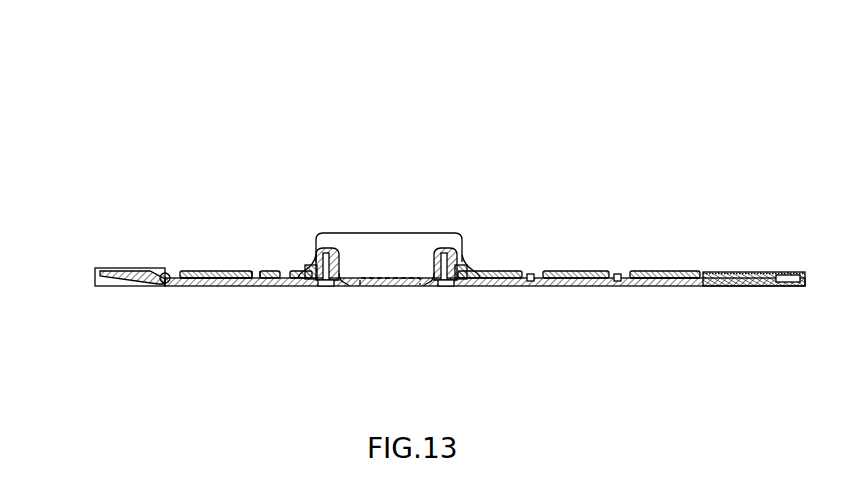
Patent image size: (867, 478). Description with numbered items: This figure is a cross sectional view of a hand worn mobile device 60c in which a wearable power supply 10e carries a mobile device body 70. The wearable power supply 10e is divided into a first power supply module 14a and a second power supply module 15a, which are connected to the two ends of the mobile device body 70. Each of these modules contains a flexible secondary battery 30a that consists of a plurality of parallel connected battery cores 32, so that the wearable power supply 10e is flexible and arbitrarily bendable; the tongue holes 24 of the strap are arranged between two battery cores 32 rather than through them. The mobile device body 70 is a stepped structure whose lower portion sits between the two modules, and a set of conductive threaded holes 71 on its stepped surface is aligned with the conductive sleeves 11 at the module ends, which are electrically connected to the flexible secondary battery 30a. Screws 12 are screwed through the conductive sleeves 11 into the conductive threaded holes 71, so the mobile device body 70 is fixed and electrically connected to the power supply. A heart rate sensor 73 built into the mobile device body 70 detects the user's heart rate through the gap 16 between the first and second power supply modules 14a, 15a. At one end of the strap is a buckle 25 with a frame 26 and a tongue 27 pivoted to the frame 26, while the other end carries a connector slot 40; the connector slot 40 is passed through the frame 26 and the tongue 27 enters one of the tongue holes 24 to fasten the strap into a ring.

The wearable power supply 10e is at (258, 263).
The conductive sleeves 11 is at (300, 264).
The screws 12 is at (321, 286).
The first power supply module 14a is at (224, 268).
The second power supply module 15a is at (671, 267).
The gap 16 is at (350, 286).
The tongue holes 24 is at (533, 269).
The buckle 25 is at (162, 192).
The frame 26 is at (103, 268).
The tongue 27 is at (140, 266).
The flexible secondary battery 30a is at (257, 366).
The battery cores 32 is at (213, 286).
The connector slot 40 is at (753, 266).
The hand worn mobile device 60c is at (370, 205).
The mobile device body 70 is at (423, 240).
The conductive threaded holes 71 is at (316, 248).
The heart rate sensor 73 is at (388, 285).